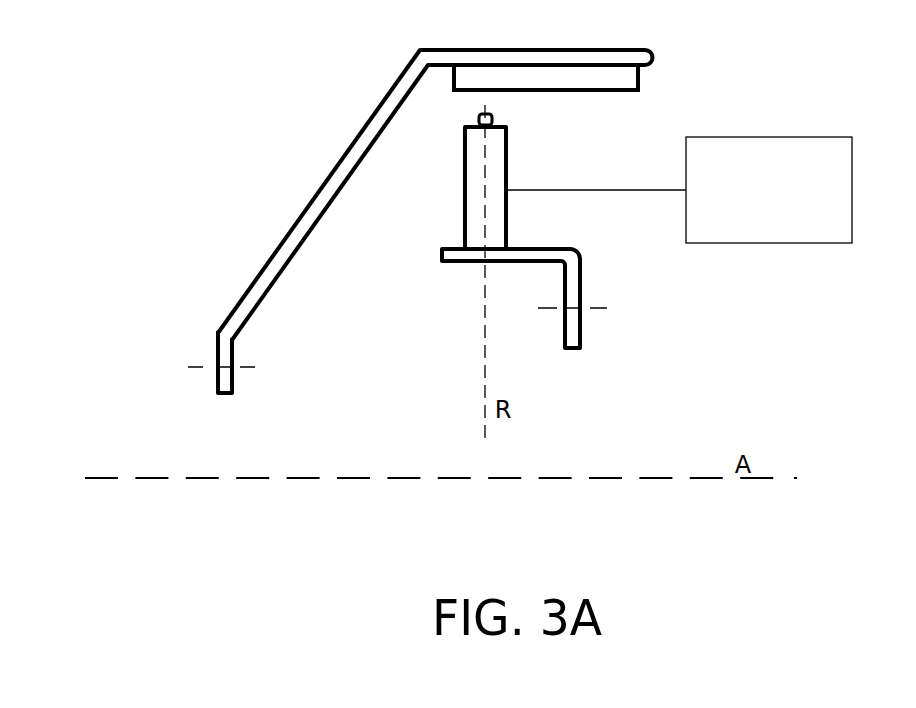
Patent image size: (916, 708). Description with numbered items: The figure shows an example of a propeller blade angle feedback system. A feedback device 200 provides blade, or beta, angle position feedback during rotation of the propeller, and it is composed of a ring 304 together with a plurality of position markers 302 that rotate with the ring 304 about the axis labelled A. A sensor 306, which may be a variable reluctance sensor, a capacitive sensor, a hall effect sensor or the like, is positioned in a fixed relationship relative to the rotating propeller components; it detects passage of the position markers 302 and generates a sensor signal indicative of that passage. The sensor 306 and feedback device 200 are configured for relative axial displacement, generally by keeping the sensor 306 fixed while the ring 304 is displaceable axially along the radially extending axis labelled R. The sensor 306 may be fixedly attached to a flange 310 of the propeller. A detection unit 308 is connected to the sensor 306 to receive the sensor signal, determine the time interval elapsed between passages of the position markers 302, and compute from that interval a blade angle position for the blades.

The feedback device 200 is at (320, 105).
The position markers 302 is at (533, 78).
The ring 304 is at (232, 316).
The sensor 306 is at (462, 173).
The detection unit 308 is at (810, 137).
The flange 310 is at (442, 253).